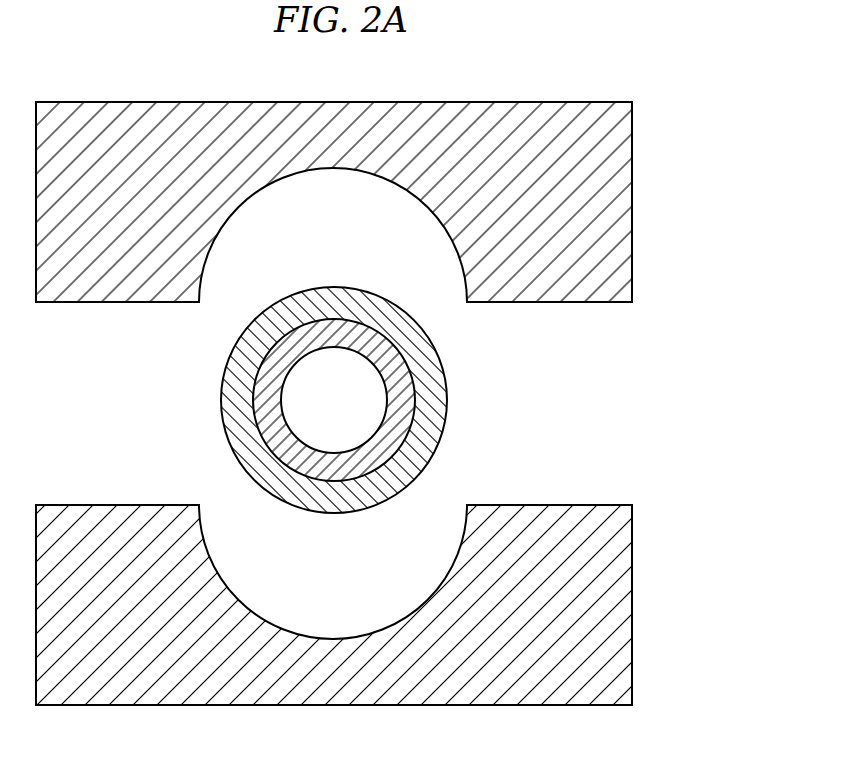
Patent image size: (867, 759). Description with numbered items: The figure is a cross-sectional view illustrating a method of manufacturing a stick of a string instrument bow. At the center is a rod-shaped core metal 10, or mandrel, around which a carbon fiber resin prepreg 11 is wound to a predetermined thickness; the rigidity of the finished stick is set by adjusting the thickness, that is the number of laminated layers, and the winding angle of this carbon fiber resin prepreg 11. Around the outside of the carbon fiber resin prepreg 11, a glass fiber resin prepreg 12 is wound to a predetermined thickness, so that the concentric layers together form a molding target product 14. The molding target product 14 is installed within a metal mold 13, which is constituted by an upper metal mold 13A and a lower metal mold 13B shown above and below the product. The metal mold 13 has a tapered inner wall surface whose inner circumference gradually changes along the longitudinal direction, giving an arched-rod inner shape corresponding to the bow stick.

The core metal 10 is at (313, 405).
The carbon fiber resin prepreg 11 is at (398, 368).
The glass fiber resin prepreg 12 is at (230, 373).
The metal mold 13 is at (407, 403).
The upper metal mold 13A is at (597, 303).
The lower metal mold 13B is at (587, 504).
The molding target product 14 is at (340, 400).